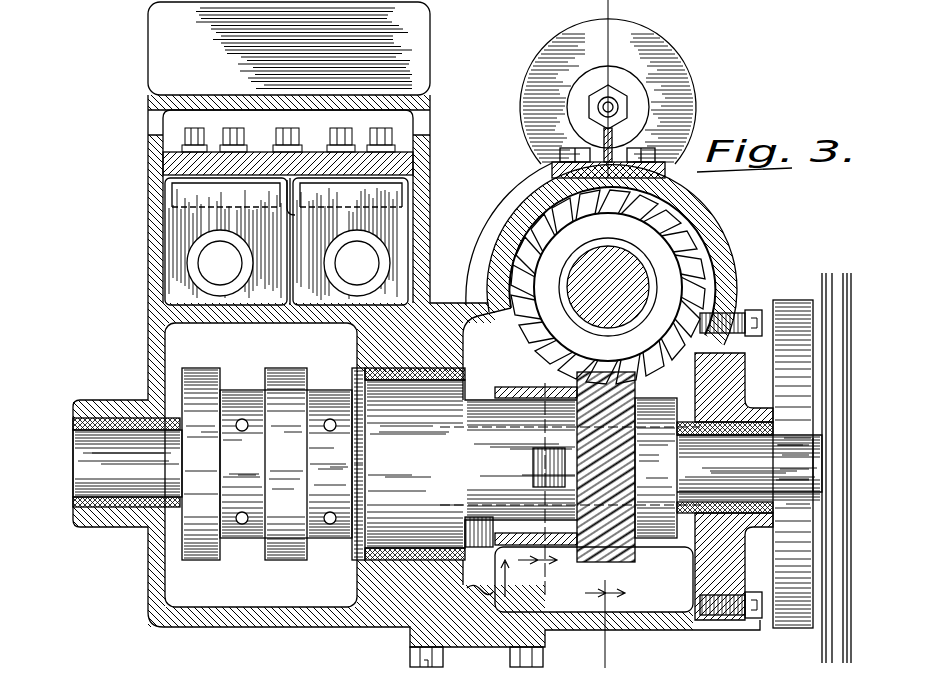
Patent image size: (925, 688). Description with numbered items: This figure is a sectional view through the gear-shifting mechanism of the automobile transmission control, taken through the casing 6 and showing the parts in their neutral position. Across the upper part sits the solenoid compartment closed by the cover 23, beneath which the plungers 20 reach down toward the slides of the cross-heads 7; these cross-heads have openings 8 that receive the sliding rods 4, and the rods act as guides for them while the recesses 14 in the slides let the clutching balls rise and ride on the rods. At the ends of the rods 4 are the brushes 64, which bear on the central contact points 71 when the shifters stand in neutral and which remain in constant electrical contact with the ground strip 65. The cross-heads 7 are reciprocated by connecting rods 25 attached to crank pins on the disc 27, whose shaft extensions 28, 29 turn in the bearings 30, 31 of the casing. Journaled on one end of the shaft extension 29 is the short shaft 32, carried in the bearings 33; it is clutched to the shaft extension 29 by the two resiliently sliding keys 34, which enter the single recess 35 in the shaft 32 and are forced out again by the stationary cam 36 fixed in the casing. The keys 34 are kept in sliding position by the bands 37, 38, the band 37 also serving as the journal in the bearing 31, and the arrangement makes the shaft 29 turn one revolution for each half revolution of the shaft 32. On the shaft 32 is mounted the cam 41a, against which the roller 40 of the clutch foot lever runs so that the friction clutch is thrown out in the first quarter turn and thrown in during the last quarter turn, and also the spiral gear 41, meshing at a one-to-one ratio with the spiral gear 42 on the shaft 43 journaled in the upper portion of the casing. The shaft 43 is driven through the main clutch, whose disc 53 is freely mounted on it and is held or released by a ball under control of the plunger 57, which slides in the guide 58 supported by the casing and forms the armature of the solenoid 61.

The sliding rod 4 is at (222, 262).
The casing 6 is at (148, 258).
The cross-head 7 is at (441, 681).
The opening 8 is at (545, 383).
The recess 14 is at (416, 416).
The plunger 20 is at (828, 642).
The cover 23 is at (165, 60).
The connecting rod 25 is at (323, 395).
The disc 27 is at (280, 552).
The shaft extension 28 is at (127, 463).
The shaft extension 29 is at (532, 464).
The bearing 30 is at (100, 420).
The bearing 31 is at (416, 345).
The short shaft 32 is at (577, 646).
The bearing 33 is at (715, 516).
The sliding key 34 is at (526, 668).
The recess 35 is at (533, 458).
The stationary cam 36 is at (480, 520).
The band 37 is at (365, 560).
The band 38 is at (500, 387).
The roller 40 is at (794, 464).
The spiral gear 41 is at (620, 562).
The cam 41a is at (786, 630).
The spiral gear 42 is at (515, 326).
The shaft 43 is at (608, 287).
The disc 53 is at (518, 198).
The plunger 57 is at (598, 107).
The guide 58 is at (638, 98).
The solenoid 61 is at (668, 62).
The brush 64 is at (215, 180).
The ground strip 65 is at (342, 219).
The contact point 71 is at (185, 167).